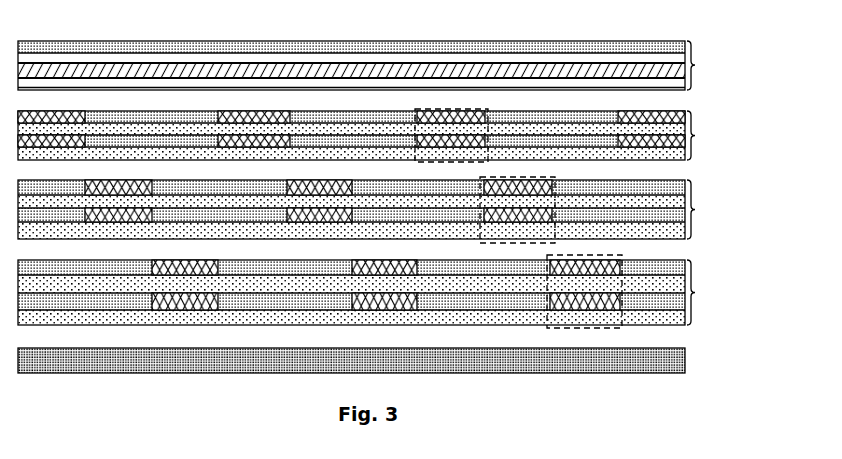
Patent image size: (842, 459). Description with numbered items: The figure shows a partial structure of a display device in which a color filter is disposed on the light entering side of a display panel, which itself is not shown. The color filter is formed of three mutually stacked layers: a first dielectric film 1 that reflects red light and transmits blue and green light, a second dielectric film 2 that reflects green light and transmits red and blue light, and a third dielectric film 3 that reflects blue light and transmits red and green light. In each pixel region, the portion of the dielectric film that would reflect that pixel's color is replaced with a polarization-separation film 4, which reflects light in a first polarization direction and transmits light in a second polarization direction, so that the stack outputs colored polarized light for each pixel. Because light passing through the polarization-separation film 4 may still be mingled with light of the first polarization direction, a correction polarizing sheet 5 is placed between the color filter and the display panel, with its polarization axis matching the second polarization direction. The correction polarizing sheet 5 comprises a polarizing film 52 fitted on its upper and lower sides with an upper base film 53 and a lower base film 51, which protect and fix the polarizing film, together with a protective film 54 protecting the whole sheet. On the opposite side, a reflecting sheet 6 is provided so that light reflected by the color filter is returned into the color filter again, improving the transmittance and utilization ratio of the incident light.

The first dielectric film 1 is at (365, 292).
The second dielectric film 2 is at (365, 209).
The third dielectric film 3 is at (365, 135).
The polarization-separation film 4 is at (668, 90).
The correction polarizing sheet 5 is at (365, 52).
The lower base film 51 is at (270, 82).
The polarizing film 52 is at (349, 72).
The upper base film 53 is at (425, 65).
The protective film 54 is at (500, 48).
The reflecting sheet 6 is at (607, 363).